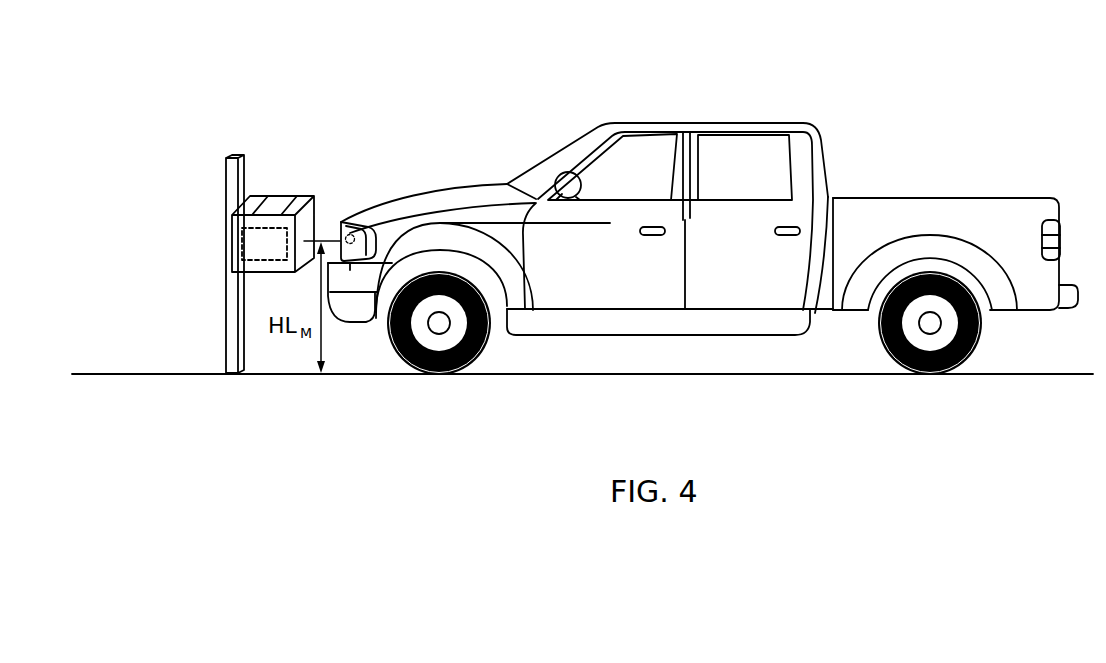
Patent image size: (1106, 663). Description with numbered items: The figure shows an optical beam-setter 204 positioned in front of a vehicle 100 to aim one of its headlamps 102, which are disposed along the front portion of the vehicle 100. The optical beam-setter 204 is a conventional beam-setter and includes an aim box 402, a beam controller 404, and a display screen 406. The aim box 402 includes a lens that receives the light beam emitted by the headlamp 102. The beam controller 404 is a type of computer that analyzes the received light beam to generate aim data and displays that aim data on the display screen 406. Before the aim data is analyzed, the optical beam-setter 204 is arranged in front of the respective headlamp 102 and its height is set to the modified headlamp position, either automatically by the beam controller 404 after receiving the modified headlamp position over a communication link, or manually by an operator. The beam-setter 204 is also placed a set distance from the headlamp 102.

The vehicle 100 is at (703, 203).
The headlamp 102 is at (358, 228).
The optical beam-setter 204 is at (220, 173).
The aim box 402 is at (305, 195).
The beam controller 404 is at (236, 249).
The display screen 406 is at (280, 195).